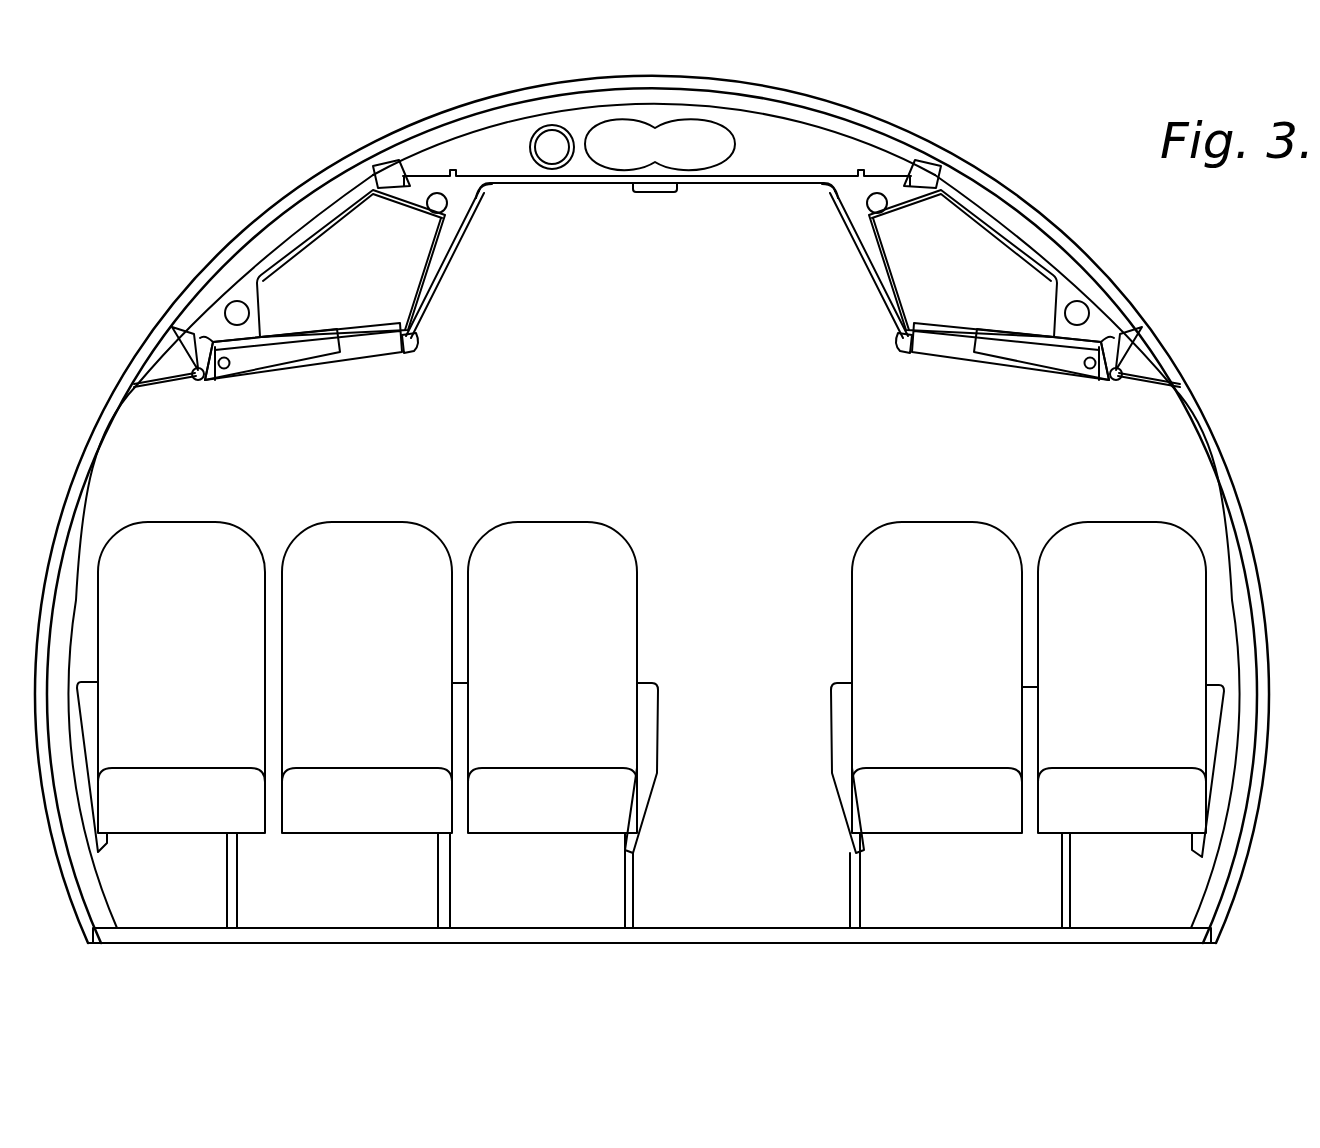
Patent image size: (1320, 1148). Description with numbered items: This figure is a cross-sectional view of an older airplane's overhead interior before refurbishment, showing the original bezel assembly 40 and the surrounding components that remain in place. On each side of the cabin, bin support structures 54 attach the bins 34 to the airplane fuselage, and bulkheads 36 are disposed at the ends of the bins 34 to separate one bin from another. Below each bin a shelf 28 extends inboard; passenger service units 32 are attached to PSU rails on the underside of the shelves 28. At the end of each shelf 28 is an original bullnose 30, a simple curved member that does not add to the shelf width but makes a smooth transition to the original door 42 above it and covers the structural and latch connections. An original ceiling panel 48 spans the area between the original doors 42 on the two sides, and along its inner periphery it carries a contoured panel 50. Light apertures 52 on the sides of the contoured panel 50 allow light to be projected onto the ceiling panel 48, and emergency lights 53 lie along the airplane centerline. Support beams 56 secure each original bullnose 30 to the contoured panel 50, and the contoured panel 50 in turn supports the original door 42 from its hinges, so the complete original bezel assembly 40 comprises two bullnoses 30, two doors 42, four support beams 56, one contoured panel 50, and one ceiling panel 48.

The shelf 28 is at (338, 337).
The original bullnose 30 is at (415, 351).
The passenger service unit 32 is at (274, 356).
The bin 34 is at (337, 220).
The bulkhead 36 is at (345, 296).
The original bezel assembly 40 is at (636, 374).
The original door 42 is at (895, 304).
The original ceiling panel 48 is at (727, 180).
The contoured panel 50 is at (808, 185).
The light aperture 52 is at (484, 192).
The emergency light 53 is at (650, 191).
The bin support structure 54 is at (401, 180).
The support beam 56 is at (448, 258).